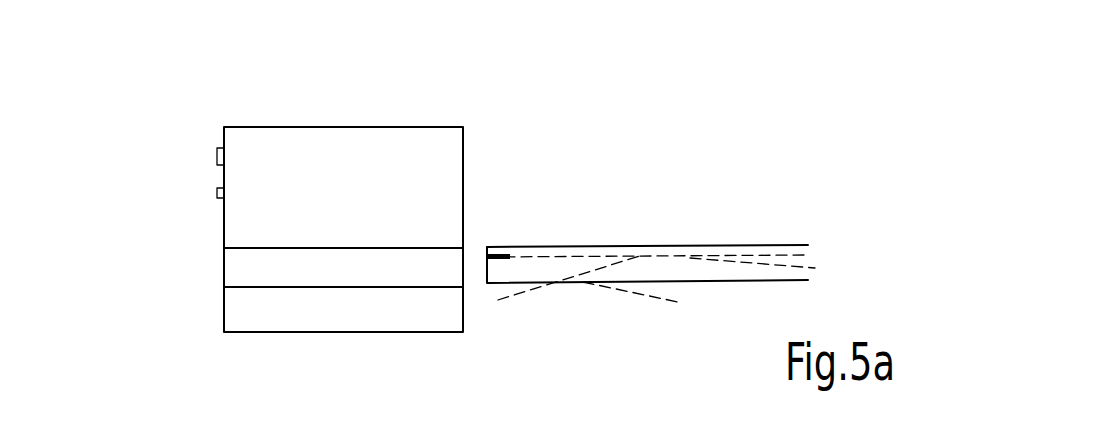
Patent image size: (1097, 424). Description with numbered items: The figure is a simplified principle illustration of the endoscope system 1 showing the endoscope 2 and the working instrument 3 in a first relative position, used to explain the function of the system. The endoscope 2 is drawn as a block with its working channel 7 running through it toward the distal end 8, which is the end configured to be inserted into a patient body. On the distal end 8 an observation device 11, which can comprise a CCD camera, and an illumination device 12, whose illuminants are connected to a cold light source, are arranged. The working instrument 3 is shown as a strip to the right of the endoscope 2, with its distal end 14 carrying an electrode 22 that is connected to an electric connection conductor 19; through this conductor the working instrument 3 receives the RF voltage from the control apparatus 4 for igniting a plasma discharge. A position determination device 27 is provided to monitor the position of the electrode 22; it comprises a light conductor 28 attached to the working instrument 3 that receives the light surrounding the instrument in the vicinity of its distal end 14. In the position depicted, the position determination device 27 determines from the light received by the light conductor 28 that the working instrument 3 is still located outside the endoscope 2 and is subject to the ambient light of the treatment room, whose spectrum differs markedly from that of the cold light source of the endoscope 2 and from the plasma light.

The endoscope system 1 is at (135, 151).
The endoscope 2 is at (409, 142).
The working instrument 3 is at (675, 267).
The control apparatus 4 is at (64, 417).
The working channel 7 is at (252, 264).
The distal end 8 is at (224, 316).
The observation device 11 is at (217, 157).
The illumination device 12 is at (217, 190).
The distal end of the working instrument 14 is at (489, 281).
The connection conductor 19 is at (557, 258).
The electrode 22 is at (502, 258).
The position determination device 27 is at (595, 288).
The light conductor 28 is at (728, 261).